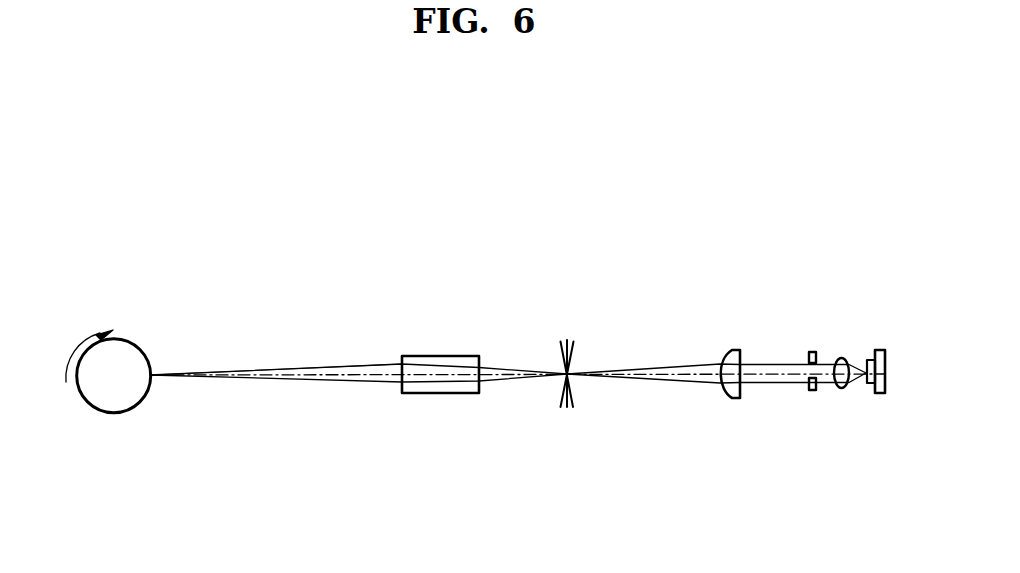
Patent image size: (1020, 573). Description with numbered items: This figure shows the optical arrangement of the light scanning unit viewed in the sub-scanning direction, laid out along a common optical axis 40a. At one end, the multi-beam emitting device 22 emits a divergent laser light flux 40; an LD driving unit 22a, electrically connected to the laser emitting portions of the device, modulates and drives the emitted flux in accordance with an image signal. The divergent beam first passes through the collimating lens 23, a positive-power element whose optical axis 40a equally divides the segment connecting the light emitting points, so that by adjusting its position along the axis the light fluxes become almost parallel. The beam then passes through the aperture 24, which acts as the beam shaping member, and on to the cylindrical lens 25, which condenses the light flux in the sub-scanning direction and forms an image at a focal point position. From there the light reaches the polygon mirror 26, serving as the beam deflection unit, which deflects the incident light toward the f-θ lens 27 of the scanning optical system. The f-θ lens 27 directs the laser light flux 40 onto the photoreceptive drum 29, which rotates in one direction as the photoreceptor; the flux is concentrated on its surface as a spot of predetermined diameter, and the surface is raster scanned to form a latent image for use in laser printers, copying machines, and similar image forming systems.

The multi-beam emitting device 22 is at (875, 350).
The LD driving unit 22a is at (878, 393).
The collimating lens 23 is at (838, 389).
The aperture 24 is at (812, 392).
The cylindrical lens 25 is at (735, 348).
The polygon mirror 26 is at (567, 416).
The f-θ lens 27 is at (442, 356).
The photoreceptive drum 29 is at (113, 411).
The laser light flux 40 is at (268, 362).
The optical axis 40a is at (330, 375).